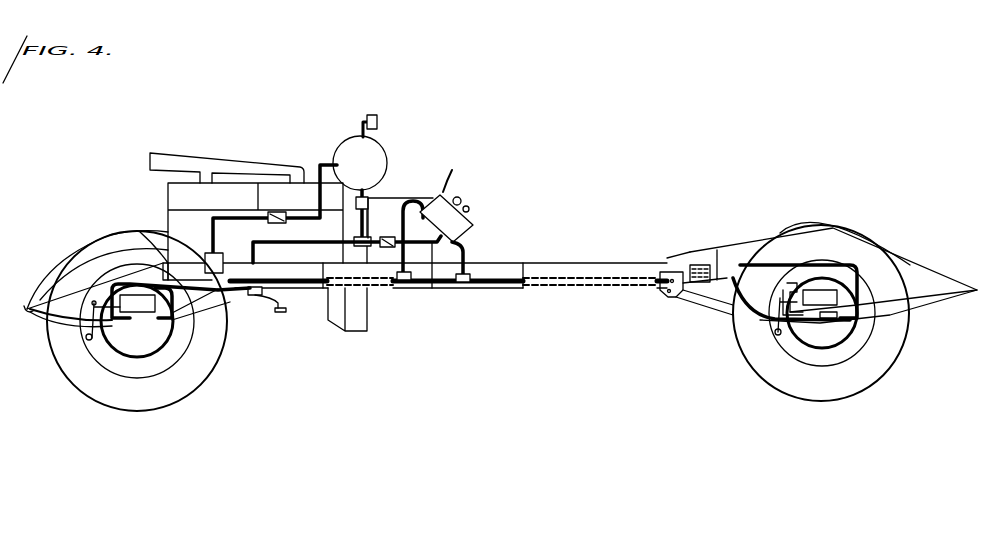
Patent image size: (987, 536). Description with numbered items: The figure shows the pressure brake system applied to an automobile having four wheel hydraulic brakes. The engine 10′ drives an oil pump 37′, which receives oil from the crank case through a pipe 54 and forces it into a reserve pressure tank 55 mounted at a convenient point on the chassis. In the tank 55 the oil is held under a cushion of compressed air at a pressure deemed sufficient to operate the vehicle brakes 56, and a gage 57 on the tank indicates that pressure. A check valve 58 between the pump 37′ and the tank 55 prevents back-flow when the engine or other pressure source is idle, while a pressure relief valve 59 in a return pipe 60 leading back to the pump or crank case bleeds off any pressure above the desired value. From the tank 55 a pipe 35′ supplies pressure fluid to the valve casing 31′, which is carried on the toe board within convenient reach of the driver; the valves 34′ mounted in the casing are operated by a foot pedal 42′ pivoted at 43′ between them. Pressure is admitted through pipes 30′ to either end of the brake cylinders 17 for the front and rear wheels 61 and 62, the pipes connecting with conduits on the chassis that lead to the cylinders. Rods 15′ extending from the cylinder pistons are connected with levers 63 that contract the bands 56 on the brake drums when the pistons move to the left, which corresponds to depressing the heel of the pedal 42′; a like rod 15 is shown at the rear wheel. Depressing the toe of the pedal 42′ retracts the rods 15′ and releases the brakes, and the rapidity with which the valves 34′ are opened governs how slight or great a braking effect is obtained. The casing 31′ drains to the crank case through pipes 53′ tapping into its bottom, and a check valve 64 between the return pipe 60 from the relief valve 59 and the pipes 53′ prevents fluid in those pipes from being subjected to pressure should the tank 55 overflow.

The engine 10′ is at (272, 190).
The frame 15 is at (783, 298).
The rods 15′ is at (108, 292).
The brake cylinders 17 is at (147, 348).
The pipes 30′ is at (452, 180).
The valve casing 31′ is at (470, 226).
The valves 34′ is at (461, 200).
The pipe 35′ is at (398, 198).
The oil pump 37′ is at (163, 233).
The foot pedal 42′ is at (440, 193).
The pivot 43′ is at (469, 209).
The pipes 53′ is at (432, 288).
The pipe 54 is at (278, 308).
The reserve pressure tank 55 is at (362, 156).
The vehicle brakes 56 is at (145, 308).
The gage 57 is at (378, 122).
The check valve 58 is at (277, 213).
The pressure relief valve 59 is at (390, 196).
The return pipe 60 is at (368, 224).
The front wheels 61 is at (105, 250).
The rear wheels 62 is at (893, 343).
The levers 63 is at (85, 337).
The check valve 64 is at (384, 248).